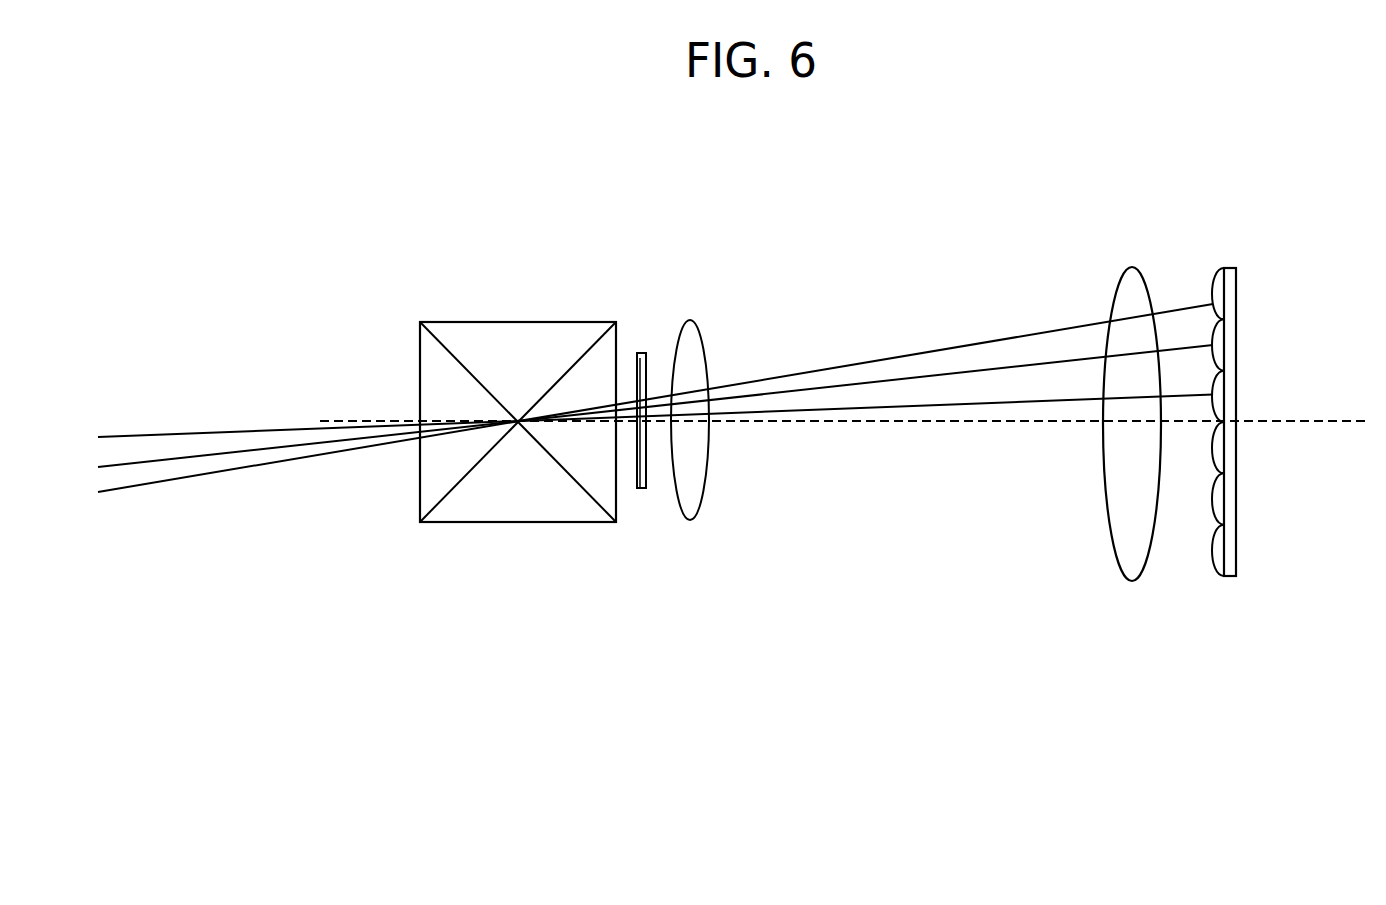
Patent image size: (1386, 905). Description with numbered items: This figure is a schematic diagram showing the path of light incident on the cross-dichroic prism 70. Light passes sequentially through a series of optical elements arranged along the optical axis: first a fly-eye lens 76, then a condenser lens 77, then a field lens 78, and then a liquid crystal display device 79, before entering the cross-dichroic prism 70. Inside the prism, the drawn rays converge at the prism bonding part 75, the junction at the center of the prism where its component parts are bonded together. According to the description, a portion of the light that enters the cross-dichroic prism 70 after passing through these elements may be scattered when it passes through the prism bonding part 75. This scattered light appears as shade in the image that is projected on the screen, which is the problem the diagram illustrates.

The cross-dichroic prism 70 is at (517, 322).
The prism bonding part 75 is at (519, 425).
The fly-eye lens 76 is at (1224, 268).
The condenser lens 77 is at (1130, 275).
The field lens 78 is at (693, 347).
The liquid crystal display device 79 is at (642, 353).